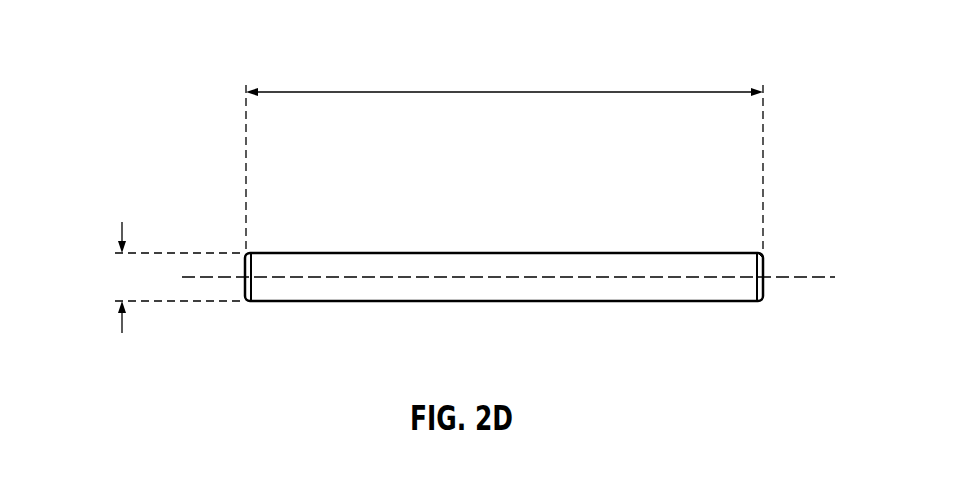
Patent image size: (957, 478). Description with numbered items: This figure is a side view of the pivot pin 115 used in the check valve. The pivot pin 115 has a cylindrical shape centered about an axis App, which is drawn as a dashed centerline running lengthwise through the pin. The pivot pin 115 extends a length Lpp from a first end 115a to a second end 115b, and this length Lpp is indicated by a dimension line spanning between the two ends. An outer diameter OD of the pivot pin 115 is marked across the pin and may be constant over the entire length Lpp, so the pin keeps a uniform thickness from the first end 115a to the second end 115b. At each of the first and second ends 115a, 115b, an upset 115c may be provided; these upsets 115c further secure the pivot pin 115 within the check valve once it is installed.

The pivot pin 115 is at (538, 334).
The first end 115a is at (252, 306).
The second end 115b is at (758, 305).
The upset 115c is at (767, 250).
The length Lpp is at (505, 92).
The axis App is at (808, 279).
The outer diameter OD is at (122, 321).